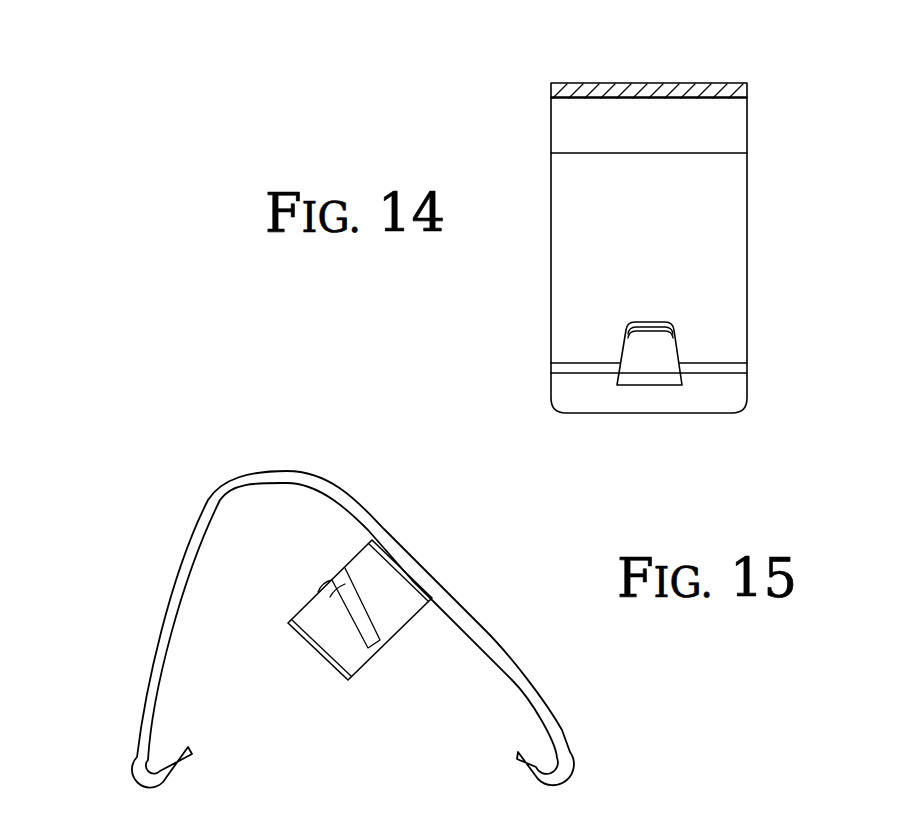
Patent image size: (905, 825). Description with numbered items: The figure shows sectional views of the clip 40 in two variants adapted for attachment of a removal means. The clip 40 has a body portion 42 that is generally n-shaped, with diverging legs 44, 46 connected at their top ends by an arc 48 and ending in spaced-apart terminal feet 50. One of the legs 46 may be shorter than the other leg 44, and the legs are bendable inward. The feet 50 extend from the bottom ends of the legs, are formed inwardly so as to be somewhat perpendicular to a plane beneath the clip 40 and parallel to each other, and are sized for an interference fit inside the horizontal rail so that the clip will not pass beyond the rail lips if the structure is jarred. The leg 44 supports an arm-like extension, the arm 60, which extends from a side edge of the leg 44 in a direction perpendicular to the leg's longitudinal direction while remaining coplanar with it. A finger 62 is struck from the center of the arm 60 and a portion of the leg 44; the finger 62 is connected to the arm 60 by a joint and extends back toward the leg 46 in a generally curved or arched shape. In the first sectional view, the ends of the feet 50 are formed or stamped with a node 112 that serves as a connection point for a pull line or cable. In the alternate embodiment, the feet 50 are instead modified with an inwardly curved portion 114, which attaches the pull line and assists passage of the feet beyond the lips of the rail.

In FIG. 14, the clip 40 is at (532, 77).
In FIG. 15, the clip 40 is at (152, 544).
In FIG. 15, the body portion 42 is at (106, 685).
In FIG. 15, the leg 44 is at (495, 663).
In FIG. 14, the leg 46 is at (730, 261).
In FIG. 15, the leg 46 is at (180, 610).
In FIG. 14, the arc 48 is at (664, 88).
In FIG. 15, the arc 48 is at (262, 474).
In FIG. 14, the terminal feet 50 is at (562, 389).
In FIG. 15, the terminal feet 50 is at (145, 768).
In FIG. 15, the arm 60 is at (358, 542).
In FIG. 15, the finger 62 is at (403, 607).
In FIG. 14, the node 112 is at (665, 347).
In FIG. 15, the inwardly curved portion 114 is at (200, 751).